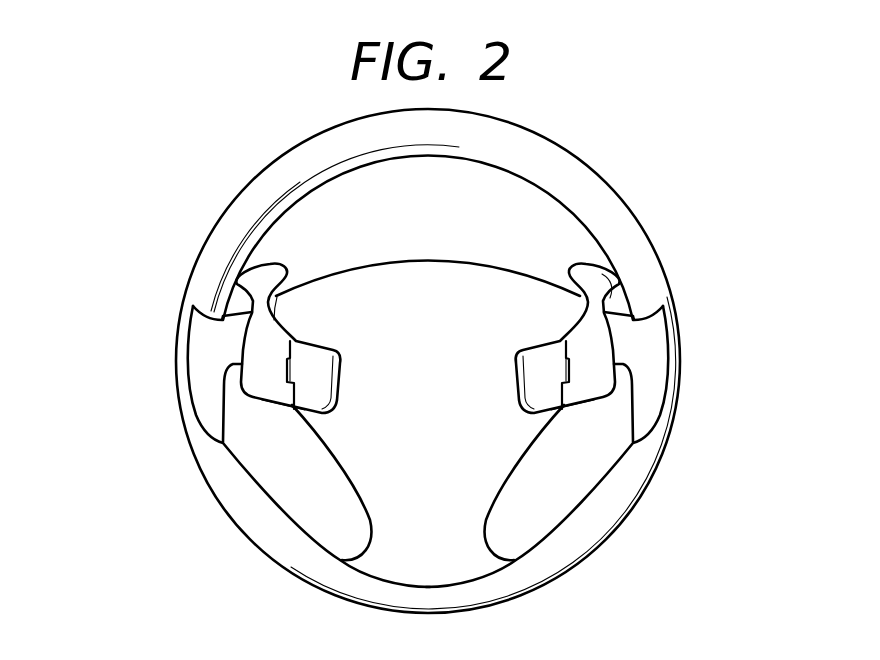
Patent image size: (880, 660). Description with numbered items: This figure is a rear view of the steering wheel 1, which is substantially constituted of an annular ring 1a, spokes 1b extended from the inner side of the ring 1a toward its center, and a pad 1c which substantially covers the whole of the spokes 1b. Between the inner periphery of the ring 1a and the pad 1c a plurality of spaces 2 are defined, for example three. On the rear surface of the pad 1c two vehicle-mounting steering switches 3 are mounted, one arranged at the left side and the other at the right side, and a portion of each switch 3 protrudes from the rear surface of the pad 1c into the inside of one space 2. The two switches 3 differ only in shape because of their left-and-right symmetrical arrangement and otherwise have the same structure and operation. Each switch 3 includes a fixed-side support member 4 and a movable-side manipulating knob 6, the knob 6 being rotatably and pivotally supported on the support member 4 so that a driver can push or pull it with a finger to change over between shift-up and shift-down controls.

The steering wheel 1 is at (691, 278).
The ring 1a is at (216, 488).
The spokes 1b is at (330, 537).
The pad 1c is at (352, 282).
The space 2 is at (543, 213).
The vehicle-mounting steering switch 3 is at (241, 402).
The fixed-side support member 4 is at (317, 400).
The manipulating knob 6 is at (263, 277).